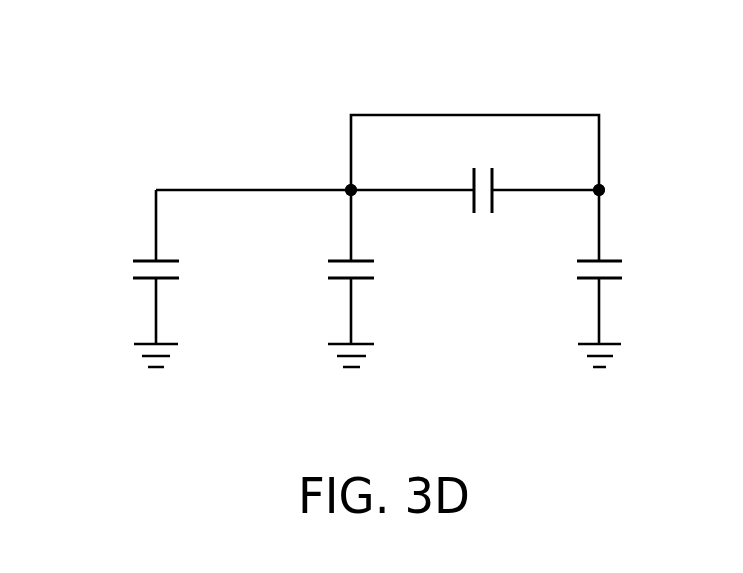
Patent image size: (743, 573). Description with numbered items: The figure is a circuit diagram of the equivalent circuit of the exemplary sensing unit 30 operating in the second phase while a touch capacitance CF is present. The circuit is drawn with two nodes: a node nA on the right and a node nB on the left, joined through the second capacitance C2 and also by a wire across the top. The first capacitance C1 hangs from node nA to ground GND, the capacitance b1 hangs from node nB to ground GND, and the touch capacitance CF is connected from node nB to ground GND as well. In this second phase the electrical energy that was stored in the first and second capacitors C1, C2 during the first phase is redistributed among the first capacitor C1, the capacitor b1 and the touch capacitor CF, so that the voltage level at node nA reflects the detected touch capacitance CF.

The sensing unit 30 is at (375, 208).
The touch capacitance CF is at (132, 270).
The capacitance b1 is at (330, 270).
The second capacitance C2 is at (482, 213).
The first capacitance C1 is at (622, 271).
The node nB is at (355, 188).
The node nA is at (606, 190).
The ground GND is at (381, 375).